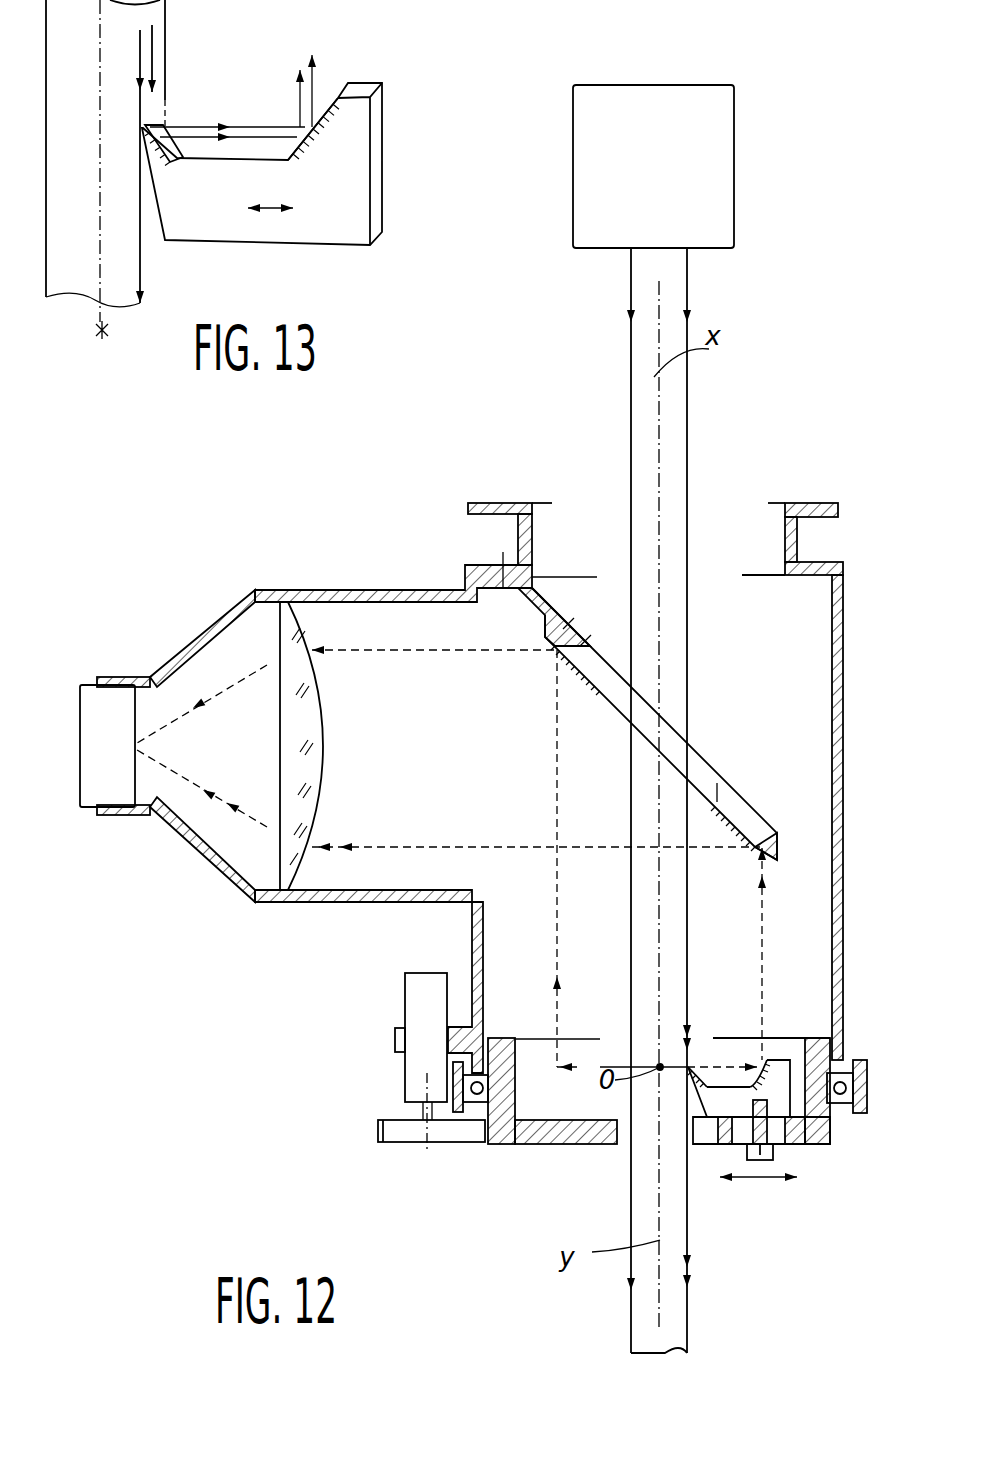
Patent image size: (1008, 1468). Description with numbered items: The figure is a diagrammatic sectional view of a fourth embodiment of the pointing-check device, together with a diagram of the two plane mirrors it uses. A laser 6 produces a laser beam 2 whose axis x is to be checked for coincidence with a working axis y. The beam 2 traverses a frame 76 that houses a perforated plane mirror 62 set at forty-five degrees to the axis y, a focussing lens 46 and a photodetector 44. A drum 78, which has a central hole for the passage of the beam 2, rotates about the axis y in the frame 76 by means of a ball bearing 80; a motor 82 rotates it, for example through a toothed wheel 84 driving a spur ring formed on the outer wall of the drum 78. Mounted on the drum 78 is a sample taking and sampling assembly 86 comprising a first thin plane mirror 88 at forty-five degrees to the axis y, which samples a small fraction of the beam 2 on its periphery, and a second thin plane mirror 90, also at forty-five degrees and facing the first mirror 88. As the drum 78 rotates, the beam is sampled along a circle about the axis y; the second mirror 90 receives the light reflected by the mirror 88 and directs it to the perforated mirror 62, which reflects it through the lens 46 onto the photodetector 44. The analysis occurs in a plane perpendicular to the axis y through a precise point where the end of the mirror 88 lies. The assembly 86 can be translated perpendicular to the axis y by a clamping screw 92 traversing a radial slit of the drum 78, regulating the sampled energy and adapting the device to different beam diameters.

In FIG. 12, the laser beam 2 is at (687, 471).
In FIG. 12, the laser 6 is at (716, 202).
In FIG. 12, the photodetector 44 is at (113, 788).
In FIG. 12, the focussing lens 46 is at (310, 783).
In FIG. 12, the perforated plane mirror 62 is at (583, 678).
In FIG. 12, the frame 76 is at (400, 590).
In FIG. 12, the drum 78 is at (550, 1133).
In FIG. 12, the ball bearing 80 is at (835, 1103).
In FIG. 12, the motor 82 is at (417, 1000).
In FIG. 12, the toothed wheel 84 is at (390, 1128).
In FIG. 13, the sample taking and sampling assembly 86 is at (333, 155).
In FIG. 12, the sample taking and sampling assembly 86 is at (780, 1098).
In FIG. 13, the first thin plane mirror 88 is at (163, 163).
In FIG. 12, the first thin plane mirror 88 is at (700, 1073).
In FIG. 13, the second plane thin mirror 90 is at (328, 98).
In FIG. 12, the second plane thin mirror 90 is at (767, 1060).
In FIG. 12, the clamping screw 92 is at (777, 1150).